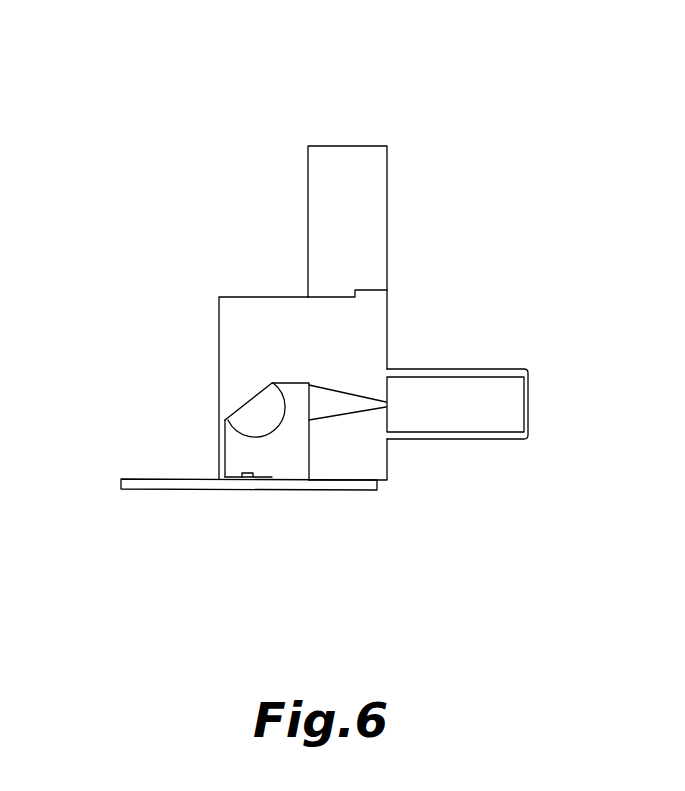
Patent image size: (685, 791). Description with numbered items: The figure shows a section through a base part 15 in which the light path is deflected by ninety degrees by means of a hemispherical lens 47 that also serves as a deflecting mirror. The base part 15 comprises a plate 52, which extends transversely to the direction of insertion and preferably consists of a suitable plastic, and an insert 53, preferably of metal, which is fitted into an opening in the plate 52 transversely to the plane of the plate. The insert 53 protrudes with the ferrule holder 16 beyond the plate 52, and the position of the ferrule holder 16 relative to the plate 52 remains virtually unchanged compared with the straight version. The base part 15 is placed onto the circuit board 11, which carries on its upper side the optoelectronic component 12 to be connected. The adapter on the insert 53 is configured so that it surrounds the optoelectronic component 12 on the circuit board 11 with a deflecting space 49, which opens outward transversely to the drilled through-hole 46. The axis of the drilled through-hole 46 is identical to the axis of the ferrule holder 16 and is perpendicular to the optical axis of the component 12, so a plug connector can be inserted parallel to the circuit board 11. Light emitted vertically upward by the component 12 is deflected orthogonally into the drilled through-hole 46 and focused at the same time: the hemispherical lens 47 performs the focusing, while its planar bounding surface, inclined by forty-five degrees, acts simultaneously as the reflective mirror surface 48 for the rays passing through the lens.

The circuit board 11 is at (210, 483).
The optoelectronic component 12 is at (252, 482).
The base part 15 is at (313, 125).
The ferrule holder 16 is at (450, 395).
The drilled through-hole 46 is at (345, 410).
The hemispherical lens 47 is at (258, 402).
The mirror surface 48 is at (243, 388).
The deflecting space 49 is at (285, 462).
The plate 52 is at (359, 197).
The insert 53 is at (373, 330).